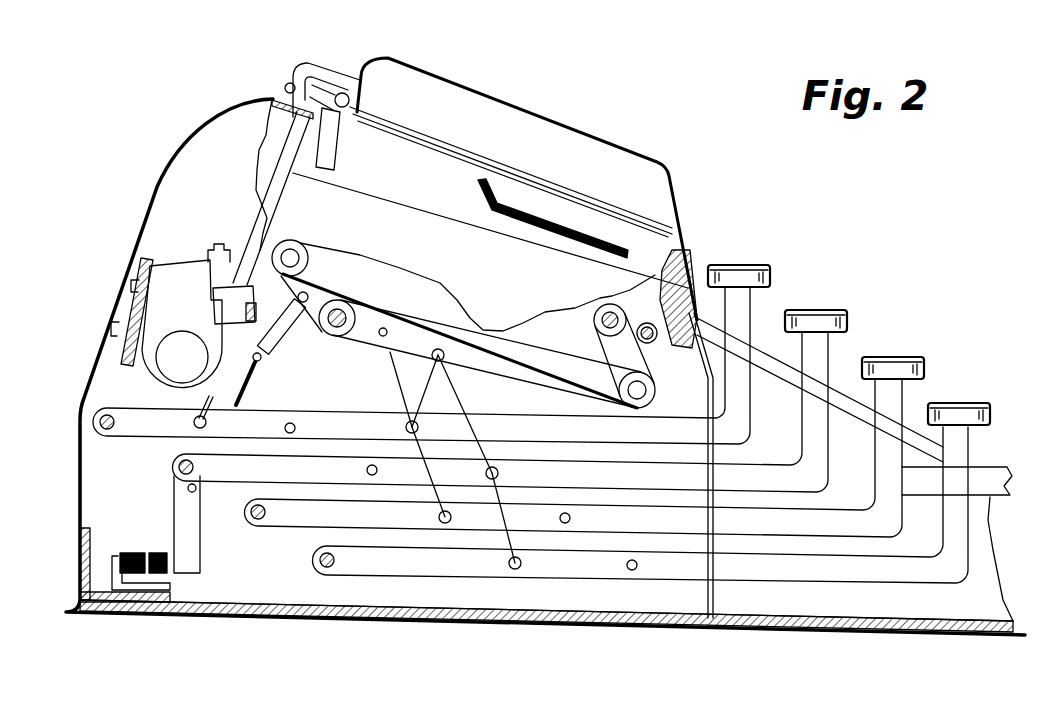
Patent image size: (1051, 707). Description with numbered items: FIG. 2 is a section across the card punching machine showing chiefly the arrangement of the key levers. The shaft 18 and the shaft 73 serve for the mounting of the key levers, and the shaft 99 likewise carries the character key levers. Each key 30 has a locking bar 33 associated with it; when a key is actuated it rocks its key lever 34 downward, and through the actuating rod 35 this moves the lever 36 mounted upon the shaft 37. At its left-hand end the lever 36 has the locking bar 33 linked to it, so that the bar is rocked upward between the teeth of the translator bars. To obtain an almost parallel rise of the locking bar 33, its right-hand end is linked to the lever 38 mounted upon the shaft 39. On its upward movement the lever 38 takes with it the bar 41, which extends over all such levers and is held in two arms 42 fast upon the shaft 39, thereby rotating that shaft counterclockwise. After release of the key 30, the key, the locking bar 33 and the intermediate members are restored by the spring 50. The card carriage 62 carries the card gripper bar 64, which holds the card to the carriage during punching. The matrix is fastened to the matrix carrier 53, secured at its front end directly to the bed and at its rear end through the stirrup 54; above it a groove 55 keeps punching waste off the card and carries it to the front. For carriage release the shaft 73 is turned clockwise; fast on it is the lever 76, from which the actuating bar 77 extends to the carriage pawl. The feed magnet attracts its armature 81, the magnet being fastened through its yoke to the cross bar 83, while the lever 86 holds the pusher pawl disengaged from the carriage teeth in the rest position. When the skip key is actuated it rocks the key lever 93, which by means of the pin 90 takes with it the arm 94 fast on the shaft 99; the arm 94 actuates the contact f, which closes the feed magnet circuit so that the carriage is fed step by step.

The card gripper bar 64 is at (305, 80).
The stirrup 54 is at (332, 73).
The matrix carrier 53 is at (420, 130).
The groove 55 is at (487, 130).
The card carriage 62 is at (333, 143).
The lever 86 is at (247, 222).
The armature 81 is at (187, 285).
The cross bar 83 is at (132, 355).
The shaft 73 is at (96, 426).
The actuating bar 77 is at (205, 401).
The lever 76 is at (160, 427).
The spring 50 is at (281, 342).
The shaft 37 is at (330, 328).
The lever 36 is at (367, 338).
The locking bar 33 is at (522, 342).
The shaft 39 is at (608, 310).
The actuating rod 35 is at (397, 362).
The lever 38 is at (643, 367).
The bar 41 is at (650, 322).
The arms 42 is at (678, 255).
The key 30 is at (745, 272).
The key lever 34 is at (892, 407).
The key lever 93 is at (1000, 470).
The arm 94 is at (182, 508).
The shaft 99 is at (197, 474).
The pin 90 is at (200, 493).
The shaft 18 is at (258, 527).
The contact f is at (150, 574).